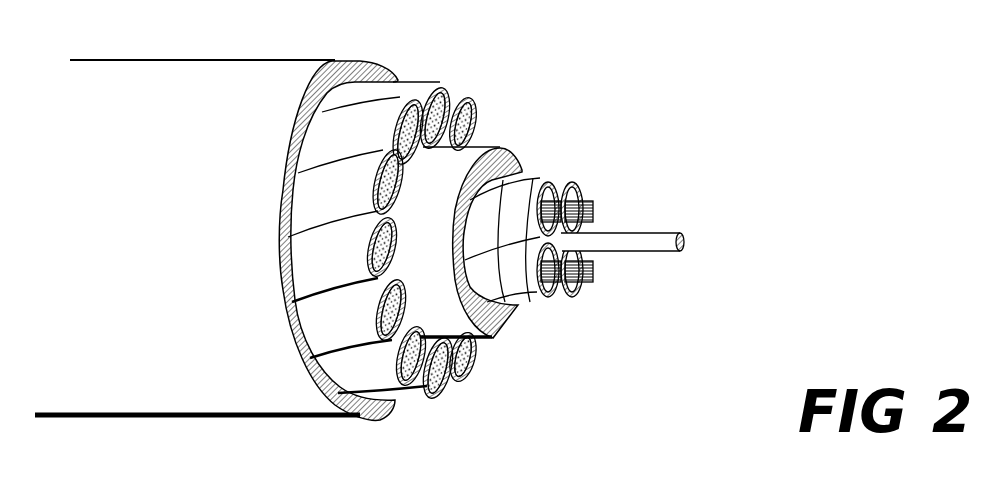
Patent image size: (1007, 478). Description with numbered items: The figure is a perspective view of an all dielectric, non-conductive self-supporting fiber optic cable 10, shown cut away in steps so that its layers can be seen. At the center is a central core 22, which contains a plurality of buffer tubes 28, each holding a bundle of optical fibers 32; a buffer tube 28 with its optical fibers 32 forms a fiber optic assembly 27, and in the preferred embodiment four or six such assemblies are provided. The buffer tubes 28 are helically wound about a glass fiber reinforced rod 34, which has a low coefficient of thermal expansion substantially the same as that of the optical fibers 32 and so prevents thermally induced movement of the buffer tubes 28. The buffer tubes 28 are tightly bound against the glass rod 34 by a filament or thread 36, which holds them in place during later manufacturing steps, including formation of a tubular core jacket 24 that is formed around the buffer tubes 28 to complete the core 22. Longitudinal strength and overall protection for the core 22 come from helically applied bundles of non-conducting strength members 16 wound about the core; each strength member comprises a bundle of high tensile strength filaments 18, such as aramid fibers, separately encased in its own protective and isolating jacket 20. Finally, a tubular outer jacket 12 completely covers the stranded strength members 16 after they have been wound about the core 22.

The fiber optic cable 10 is at (656, 72).
The outer jacket 12 is at (310, 426).
The strength members 16 is at (410, 85).
The filaments 18 is at (481, 348).
The protective and isolating jacket 20 is at (458, 380).
The central core 22 is at (528, 341).
The core jacket 24 is at (503, 147).
The fiber optic assemblies 27 is at (541, 186).
The buffer tubes 28 is at (558, 300).
The optical fibers 32 is at (574, 288).
The glass fiber reinforced rod 34 is at (647, 233).
The thread 36 is at (520, 306).